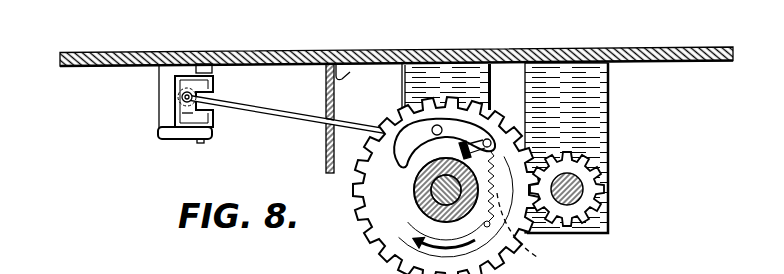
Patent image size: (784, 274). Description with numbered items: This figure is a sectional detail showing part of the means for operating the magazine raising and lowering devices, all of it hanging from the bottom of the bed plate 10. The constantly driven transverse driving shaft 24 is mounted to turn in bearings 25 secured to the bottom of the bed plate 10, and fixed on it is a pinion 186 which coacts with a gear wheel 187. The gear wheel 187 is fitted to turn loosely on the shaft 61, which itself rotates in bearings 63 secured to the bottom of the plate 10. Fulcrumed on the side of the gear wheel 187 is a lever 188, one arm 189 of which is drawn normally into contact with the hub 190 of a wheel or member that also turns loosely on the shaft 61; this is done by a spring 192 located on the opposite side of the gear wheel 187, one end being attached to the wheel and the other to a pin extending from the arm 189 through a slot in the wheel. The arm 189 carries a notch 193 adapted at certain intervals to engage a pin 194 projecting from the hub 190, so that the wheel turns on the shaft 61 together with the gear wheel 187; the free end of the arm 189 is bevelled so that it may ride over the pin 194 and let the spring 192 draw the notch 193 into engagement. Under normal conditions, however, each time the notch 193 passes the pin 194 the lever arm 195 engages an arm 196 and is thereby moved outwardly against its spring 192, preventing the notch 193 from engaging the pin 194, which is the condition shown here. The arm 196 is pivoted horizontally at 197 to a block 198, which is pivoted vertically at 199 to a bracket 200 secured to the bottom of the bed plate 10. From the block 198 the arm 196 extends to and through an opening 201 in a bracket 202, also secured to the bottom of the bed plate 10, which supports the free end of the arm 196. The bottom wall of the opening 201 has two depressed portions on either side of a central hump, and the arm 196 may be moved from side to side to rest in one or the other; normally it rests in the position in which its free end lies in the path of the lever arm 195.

The bed plate 10 is at (140, 52).
The transverse driving shaft 24 is at (603, 180).
The bearings 25 is at (610, 107).
The shaft 61 is at (430, 205).
The bearings 63 is at (428, 73).
The pinion 186 is at (580, 163).
The gear wheel 187 is at (383, 253).
The lever 188 is at (441, 126).
The arm 189 is at (493, 93).
The hub 190 is at (427, 198).
The spring 192 is at (538, 233).
The notch 193 is at (482, 122).
The pin 194 is at (432, 158).
The lever arm 195 is at (412, 137).
The arm 196 is at (285, 118).
The horizontal pivot 197 is at (182, 99).
The block 198 is at (186, 115).
The vertical pivot 199 is at (182, 140).
The bracket 200 is at (163, 84).
The opening 201 is at (330, 138).
The bracket 202 is at (326, 93).